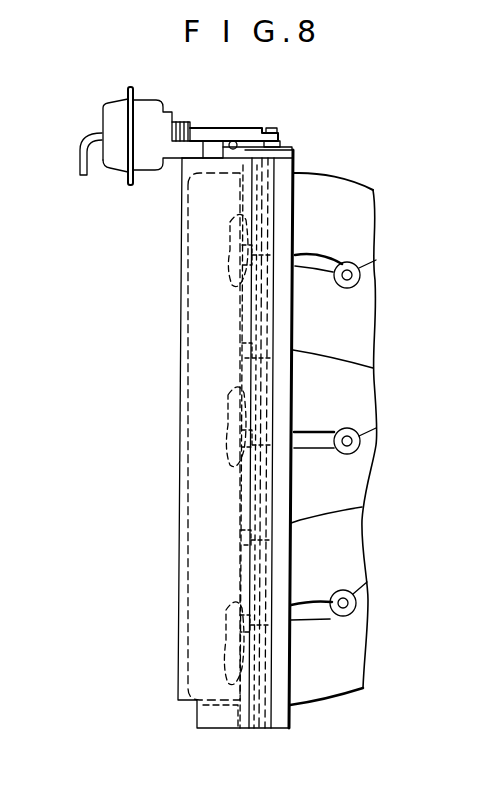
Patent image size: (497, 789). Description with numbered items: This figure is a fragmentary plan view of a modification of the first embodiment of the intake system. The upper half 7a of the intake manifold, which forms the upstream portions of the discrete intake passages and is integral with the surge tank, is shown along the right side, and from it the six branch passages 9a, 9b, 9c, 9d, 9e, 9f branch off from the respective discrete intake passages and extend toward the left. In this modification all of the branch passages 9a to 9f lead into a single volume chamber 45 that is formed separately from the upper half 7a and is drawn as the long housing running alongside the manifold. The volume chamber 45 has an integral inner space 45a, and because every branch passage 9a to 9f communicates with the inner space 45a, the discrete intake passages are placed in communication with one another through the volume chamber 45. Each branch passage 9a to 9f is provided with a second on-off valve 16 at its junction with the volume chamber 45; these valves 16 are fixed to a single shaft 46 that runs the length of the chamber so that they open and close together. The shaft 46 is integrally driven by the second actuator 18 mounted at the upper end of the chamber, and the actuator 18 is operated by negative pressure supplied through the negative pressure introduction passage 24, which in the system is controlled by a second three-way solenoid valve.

The upper half of intake manifold 7a is at (352, 710).
The branch passage 9a is at (320, 665).
The branch passage 9b is at (320, 565).
The branch passage 9c is at (313, 493).
The branch passage 9d is at (323, 403).
The branch passage 9e is at (320, 323).
The branch passage 9f is at (333, 195).
The second on-off valve 16 is at (235, 226).
The second actuator 18 is at (107, 104).
The negative pressure introduction passage 24 is at (75, 150).
The volume chamber 45 is at (182, 302).
The inner space 45a is at (197, 515).
The shaft 46 is at (287, 141).